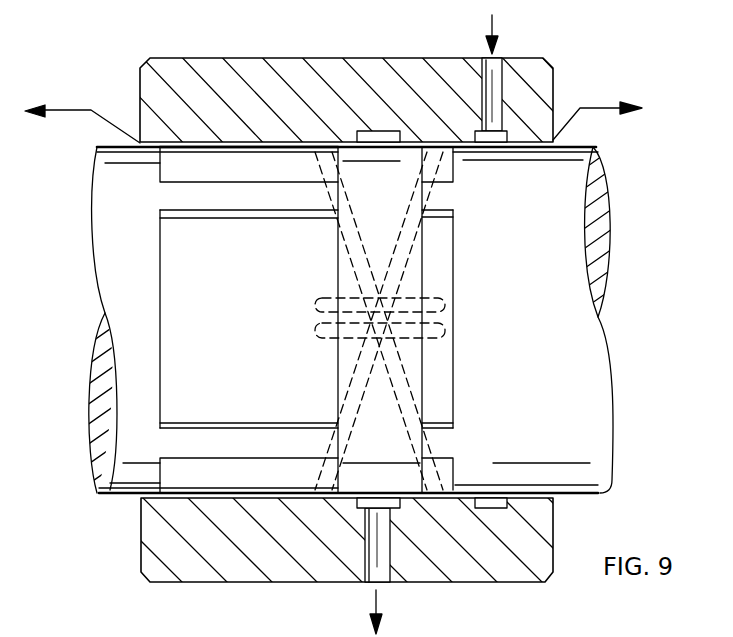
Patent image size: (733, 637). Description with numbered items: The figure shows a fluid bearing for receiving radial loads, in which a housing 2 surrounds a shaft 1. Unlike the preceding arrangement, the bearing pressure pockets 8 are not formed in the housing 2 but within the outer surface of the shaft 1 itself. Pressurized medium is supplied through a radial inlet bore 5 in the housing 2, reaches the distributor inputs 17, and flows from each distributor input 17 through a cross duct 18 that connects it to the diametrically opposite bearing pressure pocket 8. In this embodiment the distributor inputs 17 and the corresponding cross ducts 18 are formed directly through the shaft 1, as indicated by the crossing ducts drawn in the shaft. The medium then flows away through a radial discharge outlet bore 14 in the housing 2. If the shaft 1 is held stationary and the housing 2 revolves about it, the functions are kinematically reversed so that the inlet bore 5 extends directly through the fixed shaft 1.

The shaft 1 is at (120, 200).
The housing 2 is at (350, 72).
The radial bore 5 is at (483, 58).
The bearing pressure pockets 8 is at (233, 147).
The radial discharge outlet bore 14 is at (368, 583).
The distributor inlet spaces 17 is at (470, 488).
The cross ducts 18 is at (407, 377).